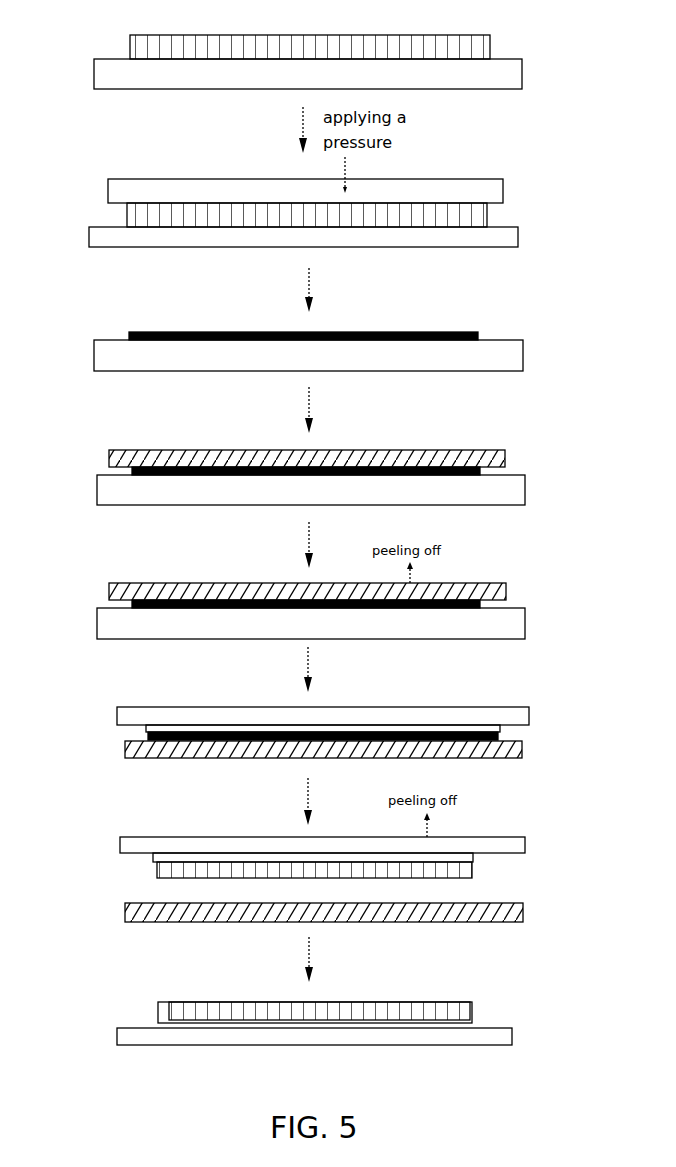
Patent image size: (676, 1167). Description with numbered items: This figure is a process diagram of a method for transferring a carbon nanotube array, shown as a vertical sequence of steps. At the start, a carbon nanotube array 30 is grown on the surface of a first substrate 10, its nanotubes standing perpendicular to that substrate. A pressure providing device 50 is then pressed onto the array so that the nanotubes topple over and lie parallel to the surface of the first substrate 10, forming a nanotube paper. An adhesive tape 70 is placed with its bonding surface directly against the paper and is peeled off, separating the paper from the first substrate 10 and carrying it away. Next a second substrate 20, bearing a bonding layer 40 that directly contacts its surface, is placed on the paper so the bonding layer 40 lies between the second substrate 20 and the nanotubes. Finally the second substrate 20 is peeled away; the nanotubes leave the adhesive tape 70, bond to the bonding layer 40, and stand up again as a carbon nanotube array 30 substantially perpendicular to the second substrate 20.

The first substrate 10 is at (490, 78).
The second substrate 20 is at (143, 707).
The carbon nanotube array 30 is at (163, 35).
The bonding layer 40 is at (148, 727).
The pressure providing device 50 is at (475, 179).
The adhesive tape 70 is at (457, 450).